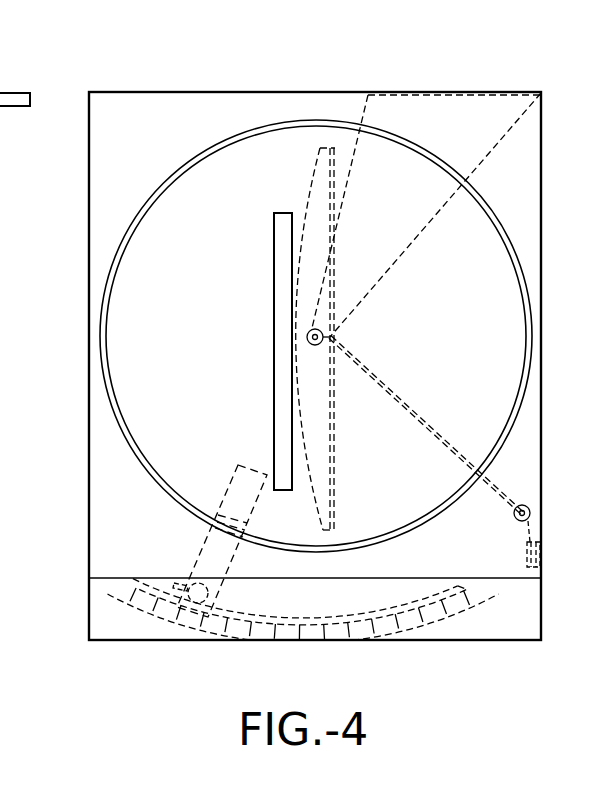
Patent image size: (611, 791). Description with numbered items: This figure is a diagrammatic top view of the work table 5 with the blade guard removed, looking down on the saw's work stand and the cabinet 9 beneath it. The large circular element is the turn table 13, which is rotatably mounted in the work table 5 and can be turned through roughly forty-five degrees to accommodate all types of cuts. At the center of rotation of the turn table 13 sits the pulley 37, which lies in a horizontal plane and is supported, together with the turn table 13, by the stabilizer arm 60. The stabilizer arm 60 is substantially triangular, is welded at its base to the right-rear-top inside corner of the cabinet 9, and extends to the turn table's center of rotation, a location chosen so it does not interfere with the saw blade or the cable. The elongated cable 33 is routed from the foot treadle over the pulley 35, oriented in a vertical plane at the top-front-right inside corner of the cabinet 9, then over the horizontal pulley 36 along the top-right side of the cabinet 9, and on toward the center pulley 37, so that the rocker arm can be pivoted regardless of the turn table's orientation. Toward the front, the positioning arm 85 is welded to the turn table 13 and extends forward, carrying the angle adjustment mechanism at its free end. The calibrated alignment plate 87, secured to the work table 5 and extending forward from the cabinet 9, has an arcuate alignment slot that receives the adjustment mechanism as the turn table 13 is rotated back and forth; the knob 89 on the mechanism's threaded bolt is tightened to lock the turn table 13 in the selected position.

The work table 5 is at (522, 169).
The cabinet 9 is at (15, 198).
The turn table 13 is at (470, 250).
The elongated cable 33 is at (480, 478).
The pulley 35 is at (540, 555).
The pulley 36 is at (530, 503).
The pulley 37 is at (330, 337).
The stabilizer arm 60 is at (432, 108).
The positioning arm 85 is at (213, 552).
The calibrated alignment plate 87 is at (335, 643).
The knob 89 is at (199, 600).